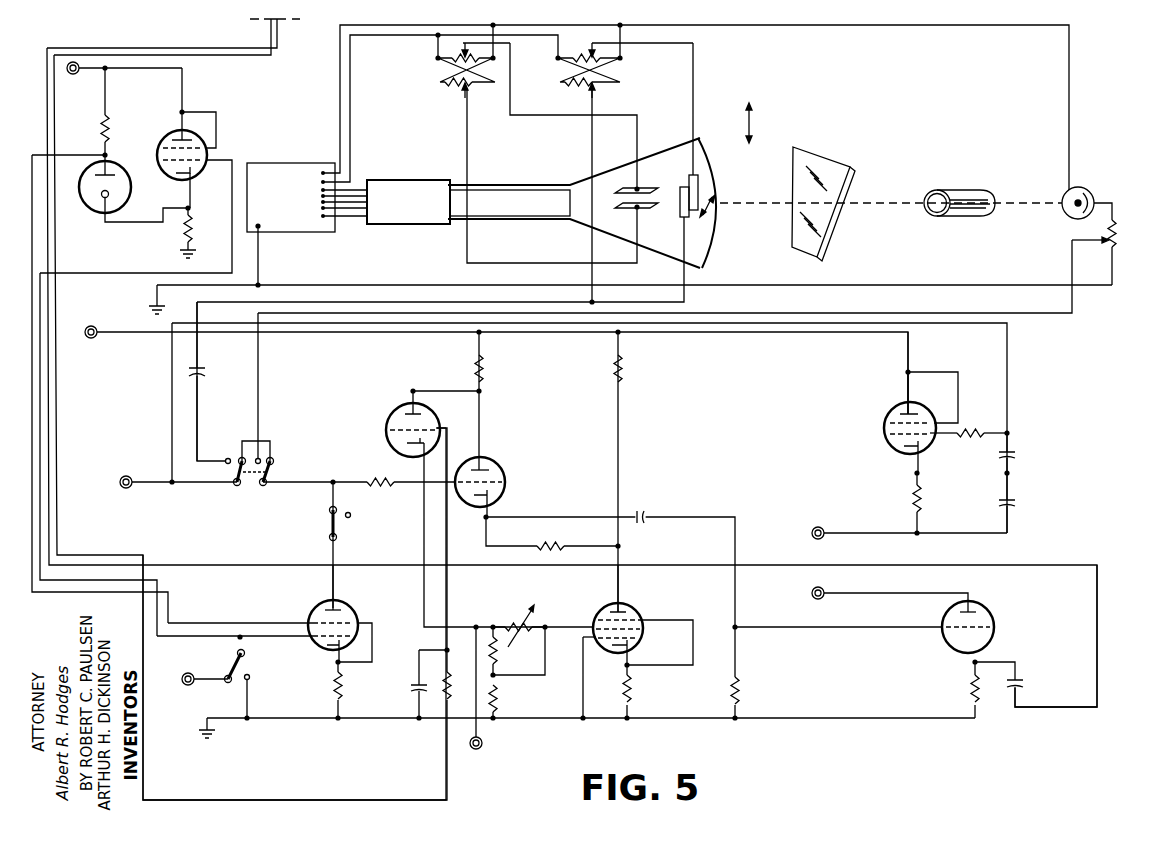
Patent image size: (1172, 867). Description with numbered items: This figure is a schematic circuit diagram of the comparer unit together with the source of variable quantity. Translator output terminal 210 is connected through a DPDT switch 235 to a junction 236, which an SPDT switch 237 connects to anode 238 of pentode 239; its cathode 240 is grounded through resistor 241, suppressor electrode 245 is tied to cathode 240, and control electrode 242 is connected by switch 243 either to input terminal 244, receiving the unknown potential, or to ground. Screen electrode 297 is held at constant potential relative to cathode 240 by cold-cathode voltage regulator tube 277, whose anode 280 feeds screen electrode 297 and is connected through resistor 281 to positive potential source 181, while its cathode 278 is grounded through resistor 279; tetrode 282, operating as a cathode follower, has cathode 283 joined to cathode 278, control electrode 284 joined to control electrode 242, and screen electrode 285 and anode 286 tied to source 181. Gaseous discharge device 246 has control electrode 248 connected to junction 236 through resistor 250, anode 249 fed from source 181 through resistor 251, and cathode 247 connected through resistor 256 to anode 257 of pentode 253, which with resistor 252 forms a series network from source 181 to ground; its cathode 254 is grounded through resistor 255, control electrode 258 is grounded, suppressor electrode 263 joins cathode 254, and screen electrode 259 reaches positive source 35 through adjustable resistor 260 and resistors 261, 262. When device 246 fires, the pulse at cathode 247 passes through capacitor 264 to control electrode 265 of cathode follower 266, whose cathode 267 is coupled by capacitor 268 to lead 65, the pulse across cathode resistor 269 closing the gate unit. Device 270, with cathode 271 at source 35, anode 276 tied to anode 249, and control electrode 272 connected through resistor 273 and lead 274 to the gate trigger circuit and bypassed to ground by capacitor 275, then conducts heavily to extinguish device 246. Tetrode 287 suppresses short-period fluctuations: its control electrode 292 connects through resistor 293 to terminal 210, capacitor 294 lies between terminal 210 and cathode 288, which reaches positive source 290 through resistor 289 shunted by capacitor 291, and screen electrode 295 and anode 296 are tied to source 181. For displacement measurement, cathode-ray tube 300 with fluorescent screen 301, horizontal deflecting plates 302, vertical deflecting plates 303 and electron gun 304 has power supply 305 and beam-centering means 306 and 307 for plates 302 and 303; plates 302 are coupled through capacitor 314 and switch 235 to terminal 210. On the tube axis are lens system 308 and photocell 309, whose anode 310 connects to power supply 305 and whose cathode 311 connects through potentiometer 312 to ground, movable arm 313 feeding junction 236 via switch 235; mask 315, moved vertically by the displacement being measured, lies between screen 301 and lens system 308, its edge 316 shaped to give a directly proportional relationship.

The lead 65 is at (213, 47).
The lead 274 is at (218, 50).
The positive potential source 181 is at (71, 75).
The resistor 281 is at (100, 130).
The voltage regulator tube 277 is at (124, 180).
The anode 280 is at (91, 170).
The cathode 278 is at (103, 198).
The electron discharge device 282 is at (172, 140).
The anode 286 is at (177, 134).
The screen electrode 285 is at (210, 148).
The cathode 283 is at (180, 178).
The control electrode 284 is at (193, 178).
The resistor 279 is at (183, 224).
The power supply 305 is at (290, 166).
The electron gun 304 is at (492, 197).
The cathode-ray tube 300 is at (535, 193).
The vertical deflecting plates 303 is at (647, 187).
The beam-centering means 307 is at (440, 77).
The beam-centering means 306 is at (622, 70).
The fluorescent screen 301 is at (717, 183).
The horizontal deflecting plates 302 is at (716, 230).
The mask 315 is at (823, 163).
The edge 316 is at (830, 232).
The lens system 308 is at (973, 217).
The photocell 309 is at (1067, 192).
The anode 310 is at (1077, 207).
The cathode 311 is at (1090, 197).
The potentiometer 312 is at (1120, 248).
The movable arm 313 is at (1107, 244).
The capacitor 314 is at (200, 368).
The terminal 210 is at (118, 489).
The DPDT switch 235 is at (250, 489).
The junction 236 is at (337, 468).
The SPDT switch 237 is at (328, 534).
The resistor 250 is at (375, 493).
The electron discharge device 270 is at (393, 420).
The anode 276 is at (405, 407).
The control electrode 272 is at (428, 428).
The cathode 271 is at (405, 452).
The resistor 251 is at (487, 362).
The resistor 252 is at (630, 363).
The gaseous discharge device 246 is at (505, 476).
The control electrode 248 is at (470, 470).
The anode 249 is at (483, 469).
The cathode 247 is at (477, 500).
The capacitor 264 is at (640, 511).
The resistor 256 is at (537, 545).
The electron discharge device 287 is at (895, 413).
The anode 296 is at (905, 408).
The screen electrode 295 is at (898, 425).
The control electrode 292 is at (897, 437).
The cathode 288 is at (903, 456).
The resistor 293 is at (985, 442).
The capacitor 294 is at (1017, 455).
The resistor 289 is at (927, 505).
The capacitor 291 is at (1018, 500).
The positive potential source 290 is at (811, 529).
The electron discharge device 239 is at (360, 608).
The suppressor electrode 245 is at (325, 608).
The anode 238 is at (338, 603).
The screen electrode 297 is at (317, 622).
The control electrode 242 is at (323, 639).
The cathode 240 is at (332, 653).
The resistor 241 is at (347, 683).
The input terminal 244 is at (200, 670).
The switch 243 is at (242, 686).
The capacitor 275 is at (413, 687).
The resistor 273 is at (442, 694).
The adjustable resistor 260 is at (513, 623).
The resistor 261 is at (498, 653).
The resistor 262 is at (498, 697).
The positive potential source 35 is at (483, 745).
The electron discharge device 253 is at (636, 606).
The anode 257 is at (622, 604).
The suppressor electrode 263 is at (641, 616).
The screen electrode 259 is at (634, 629).
The control electrode 258 is at (634, 641).
The cathode 254 is at (621, 647).
The resistor 255 is at (637, 690).
The cathode 267 is at (960, 655).
The control electrode 265 is at (975, 612).
The electron discharge device 266 is at (990, 620).
The cathode resistor 269 is at (970, 690).
The capacitor 268 is at (1004, 690).